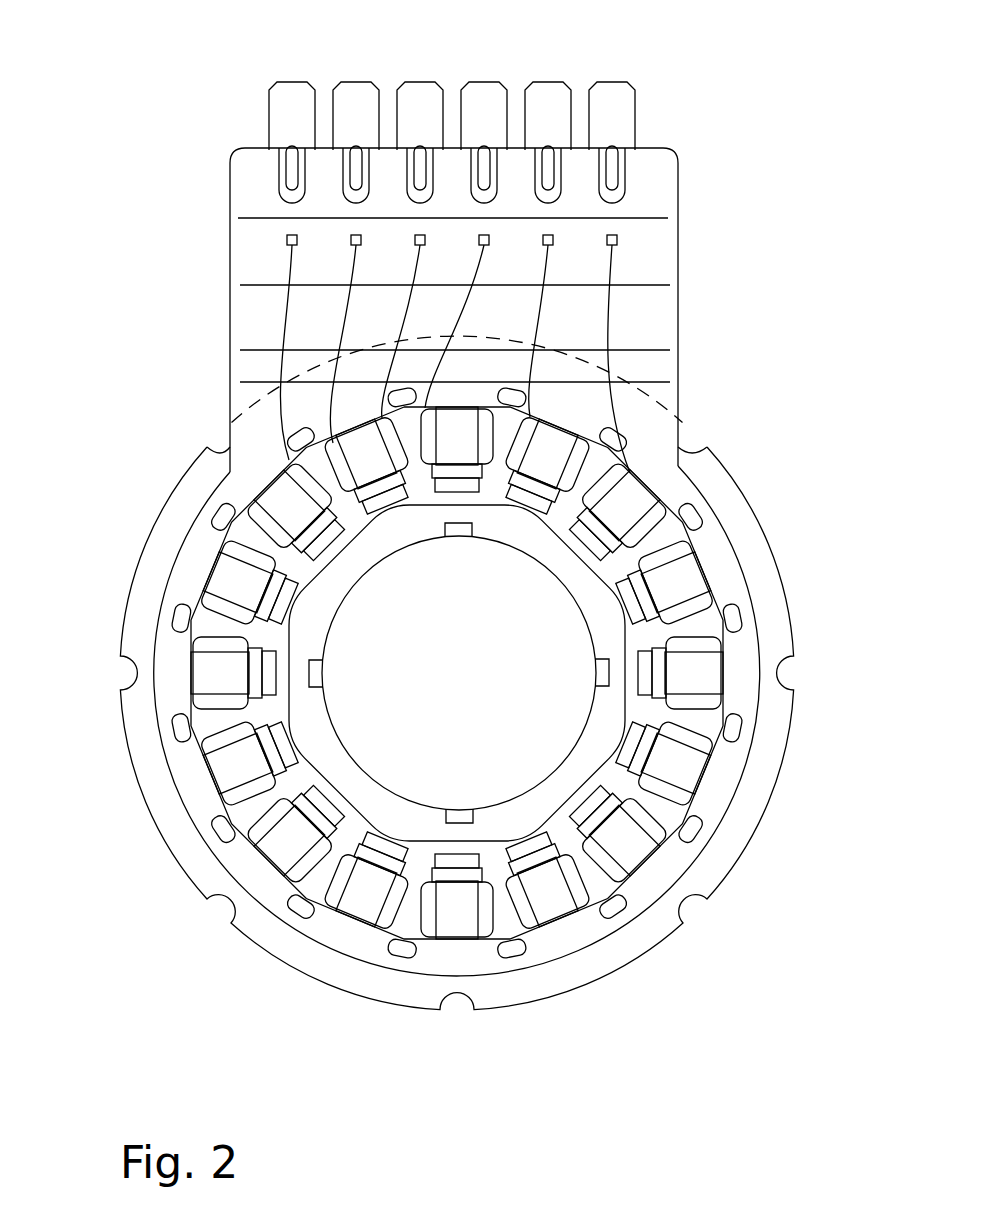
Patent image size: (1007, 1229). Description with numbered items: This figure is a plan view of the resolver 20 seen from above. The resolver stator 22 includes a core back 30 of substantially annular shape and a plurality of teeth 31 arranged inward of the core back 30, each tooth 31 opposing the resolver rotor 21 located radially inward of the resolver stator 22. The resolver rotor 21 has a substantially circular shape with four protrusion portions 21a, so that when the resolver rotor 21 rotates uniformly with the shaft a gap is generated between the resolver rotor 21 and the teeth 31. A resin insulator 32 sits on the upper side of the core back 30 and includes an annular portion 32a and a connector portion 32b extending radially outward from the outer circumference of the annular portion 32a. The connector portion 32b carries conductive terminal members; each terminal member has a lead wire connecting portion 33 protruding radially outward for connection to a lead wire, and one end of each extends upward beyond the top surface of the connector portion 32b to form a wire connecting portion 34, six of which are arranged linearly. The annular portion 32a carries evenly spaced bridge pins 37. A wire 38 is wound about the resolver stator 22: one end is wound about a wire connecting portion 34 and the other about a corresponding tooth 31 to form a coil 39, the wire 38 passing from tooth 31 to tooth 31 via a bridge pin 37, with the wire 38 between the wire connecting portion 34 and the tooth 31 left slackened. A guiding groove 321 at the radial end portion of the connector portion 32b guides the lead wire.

The resolver 20 is at (687, 992).
The resolver rotor 21 is at (606, 722).
The protrusion portion 21a is at (420, 508).
The resolver stator 22 is at (290, 976).
The core back 30 is at (152, 735).
The tooth 31 is at (566, 553).
The insulator 32 is at (201, 514).
The annular portion 32a is at (176, 586).
The connector portion 32b is at (230, 216).
The lead wire connecting portion 33 is at (358, 82).
The wire connecting portion 34 is at (620, 239).
The bridge pin 37 is at (214, 830).
The wire 38 is at (607, 322).
The coil 39 is at (698, 648).
The guiding groove 321 is at (288, 185).